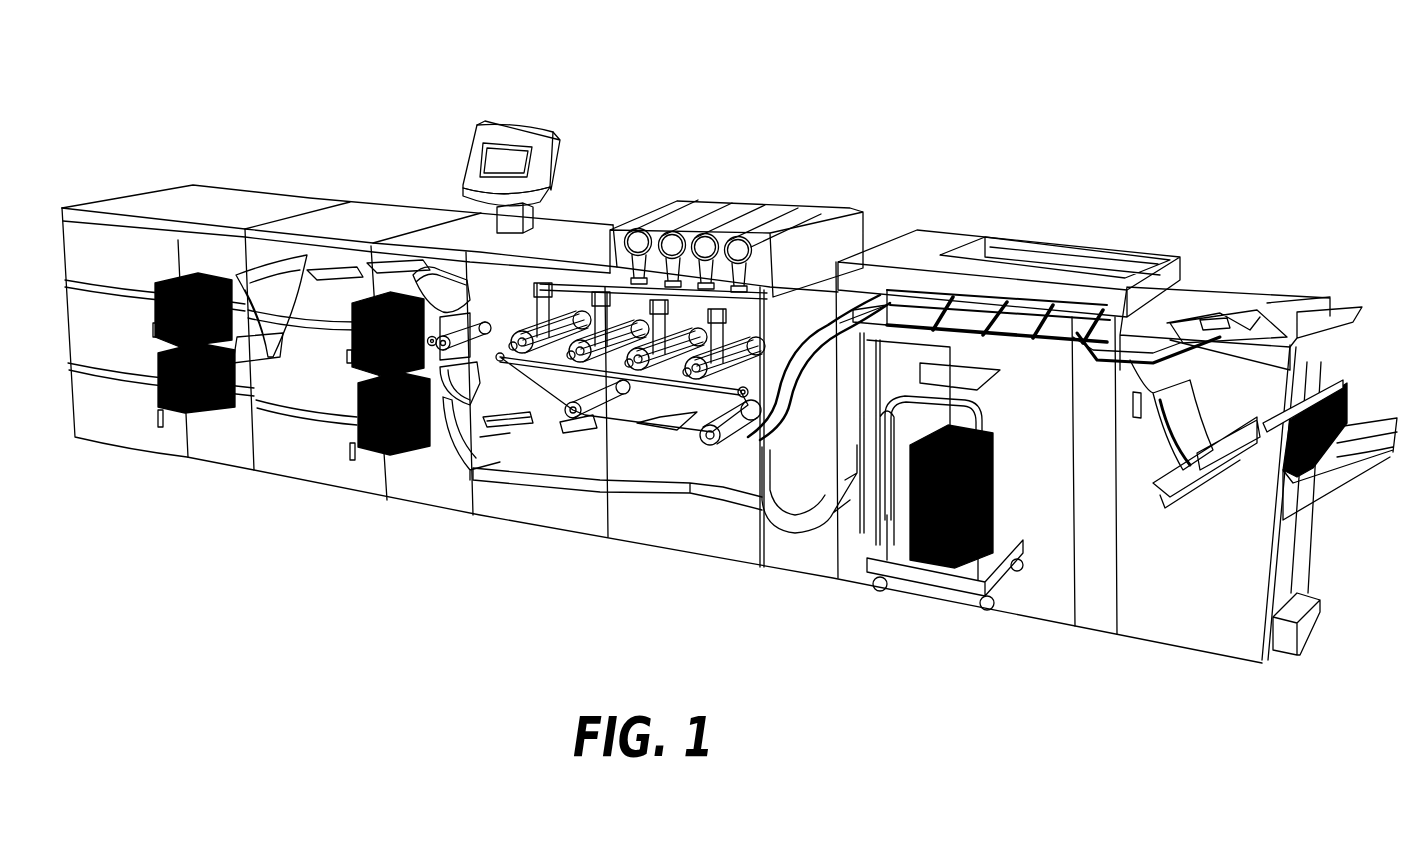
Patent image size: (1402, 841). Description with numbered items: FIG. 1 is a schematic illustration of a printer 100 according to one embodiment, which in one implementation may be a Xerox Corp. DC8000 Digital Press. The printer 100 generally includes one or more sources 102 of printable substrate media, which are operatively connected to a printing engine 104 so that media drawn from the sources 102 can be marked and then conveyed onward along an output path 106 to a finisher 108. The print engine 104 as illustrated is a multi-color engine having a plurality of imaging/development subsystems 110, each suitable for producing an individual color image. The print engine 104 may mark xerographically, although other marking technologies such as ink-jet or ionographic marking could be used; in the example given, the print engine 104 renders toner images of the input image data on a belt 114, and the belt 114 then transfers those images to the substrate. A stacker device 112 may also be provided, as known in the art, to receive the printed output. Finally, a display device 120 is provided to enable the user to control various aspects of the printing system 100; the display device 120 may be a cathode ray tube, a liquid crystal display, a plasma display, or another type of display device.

The printer 100 is at (712, 424).
The sources of printable substrate media 102 is at (320, 382).
The printing engine 104 is at (503, 305).
The output path 106 is at (440, 468).
The finisher 108 is at (1148, 510).
The imaging/development subsystems 110 is at (788, 205).
The stacker device 112 is at (895, 572).
The belt 114 is at (640, 408).
The display device 120 is at (460, 150).